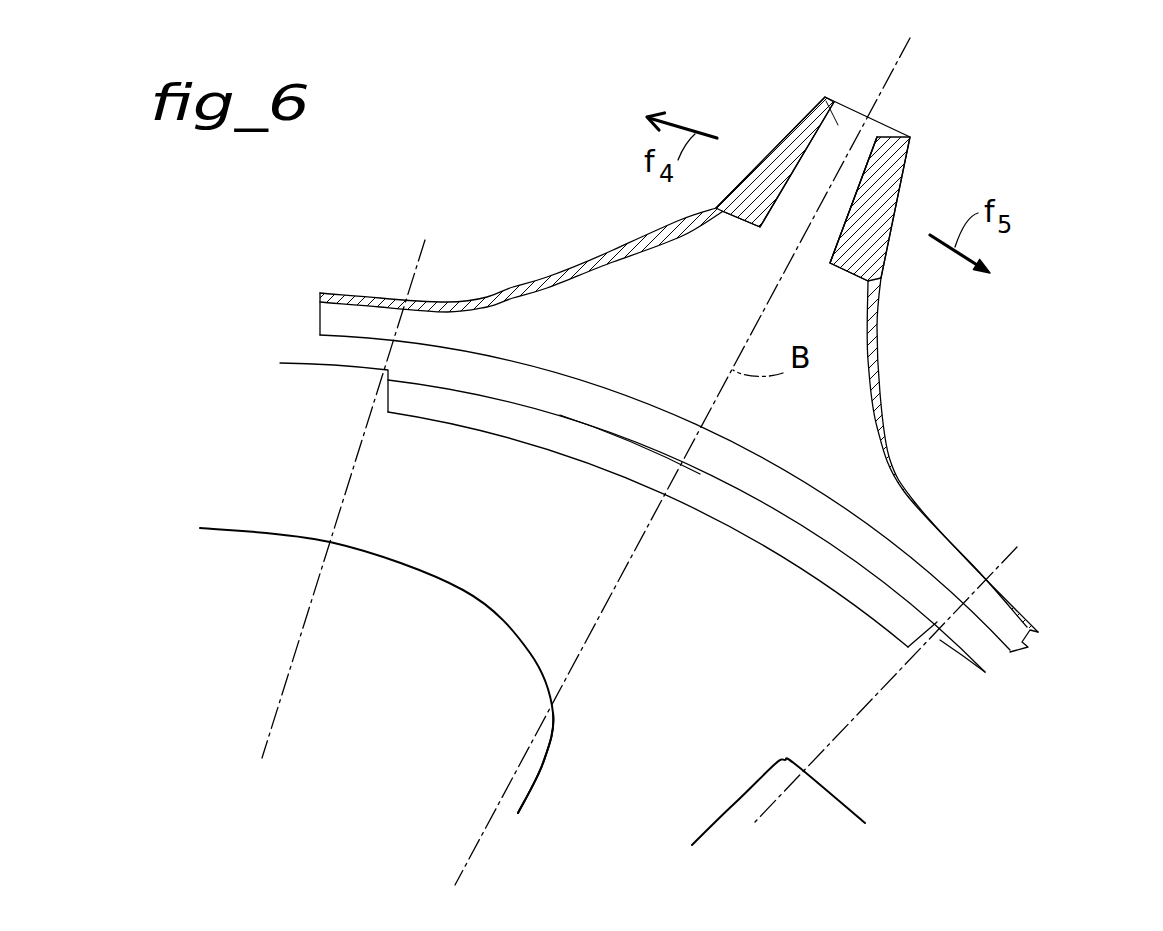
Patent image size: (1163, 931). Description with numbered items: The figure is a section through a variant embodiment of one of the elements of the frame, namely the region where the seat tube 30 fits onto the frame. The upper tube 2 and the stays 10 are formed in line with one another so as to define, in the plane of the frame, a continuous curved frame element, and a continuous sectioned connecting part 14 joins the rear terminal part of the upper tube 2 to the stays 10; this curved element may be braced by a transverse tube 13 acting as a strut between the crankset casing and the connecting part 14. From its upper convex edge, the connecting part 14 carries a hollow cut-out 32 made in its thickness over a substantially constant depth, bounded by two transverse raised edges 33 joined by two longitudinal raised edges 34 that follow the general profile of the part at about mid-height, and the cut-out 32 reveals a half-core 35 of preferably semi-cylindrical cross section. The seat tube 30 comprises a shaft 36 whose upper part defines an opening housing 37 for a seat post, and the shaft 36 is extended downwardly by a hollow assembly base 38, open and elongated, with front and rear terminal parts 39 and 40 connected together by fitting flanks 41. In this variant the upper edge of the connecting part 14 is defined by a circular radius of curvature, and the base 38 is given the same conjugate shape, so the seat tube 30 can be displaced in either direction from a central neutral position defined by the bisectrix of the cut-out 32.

The upper tube 2 is at (272, 513).
The stays 10 is at (955, 678).
The transverse tube 13 is at (603, 773).
The connecting part 14 is at (690, 700).
The seat tube 30 is at (912, 198).
The hollow cut-out 32 is at (638, 483).
The transverse raised edges 33 is at (920, 636).
The longitudinal raised edges 34 is at (745, 533).
The half-core 35 is at (572, 445).
The shaft 36 is at (780, 143).
The opening housing 37 is at (840, 127).
The hollow assembly base 38 is at (905, 468).
The front terminal part 39 is at (350, 297).
The rear terminal part 40 is at (1013, 600).
The fitting flanks 41 is at (790, 435).